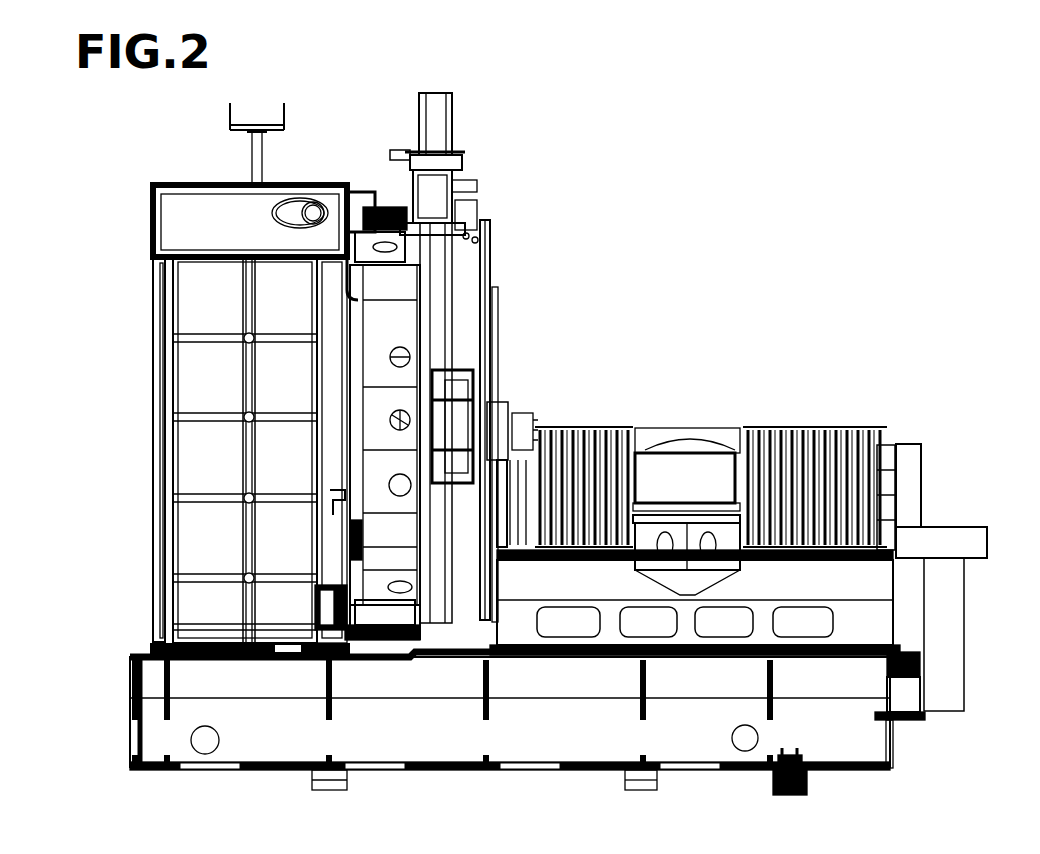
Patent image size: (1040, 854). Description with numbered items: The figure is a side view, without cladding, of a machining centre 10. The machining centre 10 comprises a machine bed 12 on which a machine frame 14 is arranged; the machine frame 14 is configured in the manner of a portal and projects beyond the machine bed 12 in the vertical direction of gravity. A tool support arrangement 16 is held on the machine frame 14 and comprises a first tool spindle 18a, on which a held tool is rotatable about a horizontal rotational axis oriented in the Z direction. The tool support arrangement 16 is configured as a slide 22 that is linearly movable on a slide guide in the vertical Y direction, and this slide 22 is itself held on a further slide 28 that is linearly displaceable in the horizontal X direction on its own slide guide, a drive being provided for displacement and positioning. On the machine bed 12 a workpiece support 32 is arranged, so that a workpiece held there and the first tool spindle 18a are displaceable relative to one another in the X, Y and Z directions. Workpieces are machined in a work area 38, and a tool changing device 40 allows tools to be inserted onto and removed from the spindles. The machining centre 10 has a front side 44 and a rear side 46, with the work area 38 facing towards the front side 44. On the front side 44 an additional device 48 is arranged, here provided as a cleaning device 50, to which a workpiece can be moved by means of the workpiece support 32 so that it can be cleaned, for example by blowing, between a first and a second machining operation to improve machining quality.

The machining centre 10 is at (772, 207).
The machine bed 12 is at (540, 742).
The machine frame 14 is at (373, 200).
The tool support arrangement 16 is at (513, 180).
The first tool spindle 18a is at (497, 425).
The slide 22 is at (505, 330).
The slide 28 is at (475, 273).
The workpiece support 32 is at (712, 470).
The work area 38 is at (656, 396).
The tool changing device 40 is at (452, 122).
The front side 44 is at (890, 736).
The rear side 46 is at (130, 704).
The additional device 48 is at (937, 429).
The cleaning device 50 is at (889, 456).